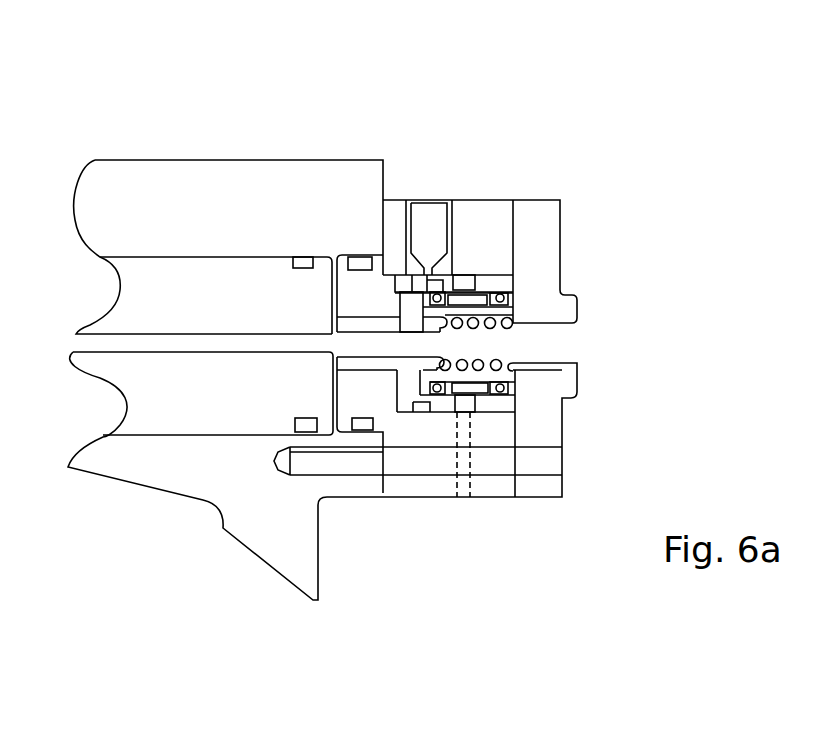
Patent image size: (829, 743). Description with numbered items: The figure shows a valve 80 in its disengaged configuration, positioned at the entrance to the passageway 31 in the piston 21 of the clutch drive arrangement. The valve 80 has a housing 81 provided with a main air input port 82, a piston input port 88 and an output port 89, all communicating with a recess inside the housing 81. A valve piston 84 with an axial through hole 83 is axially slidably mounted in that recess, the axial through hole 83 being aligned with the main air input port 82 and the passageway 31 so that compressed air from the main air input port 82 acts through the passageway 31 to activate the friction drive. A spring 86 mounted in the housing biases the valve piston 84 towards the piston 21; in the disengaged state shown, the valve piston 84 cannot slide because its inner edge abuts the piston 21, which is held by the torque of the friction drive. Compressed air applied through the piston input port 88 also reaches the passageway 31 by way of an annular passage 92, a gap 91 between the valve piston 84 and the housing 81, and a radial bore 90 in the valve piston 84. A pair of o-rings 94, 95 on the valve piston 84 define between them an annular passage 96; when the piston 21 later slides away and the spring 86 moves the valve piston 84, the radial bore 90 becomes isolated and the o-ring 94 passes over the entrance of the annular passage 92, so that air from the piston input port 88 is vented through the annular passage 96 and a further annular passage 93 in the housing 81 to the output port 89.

The piston 21 is at (145, 292).
The passageway 31 is at (185, 345).
The valve 80 is at (580, 157).
The housing 81 is at (515, 237).
The main air input port 82 is at (560, 343).
The axial through hole 83 is at (492, 343).
The valve piston 84 is at (508, 305).
The spring 86 is at (517, 370).
The piston input port 88 is at (430, 192).
The output port 89 is at (465, 477).
The radial bore 90 is at (408, 306).
The gap 91 is at (411, 276).
The annular passage 92 is at (413, 412).
The further annular passage 93 is at (463, 277).
The o-ring 94 is at (440, 393).
The o-ring 95 is at (512, 290).
The annular passage 96 is at (472, 298).